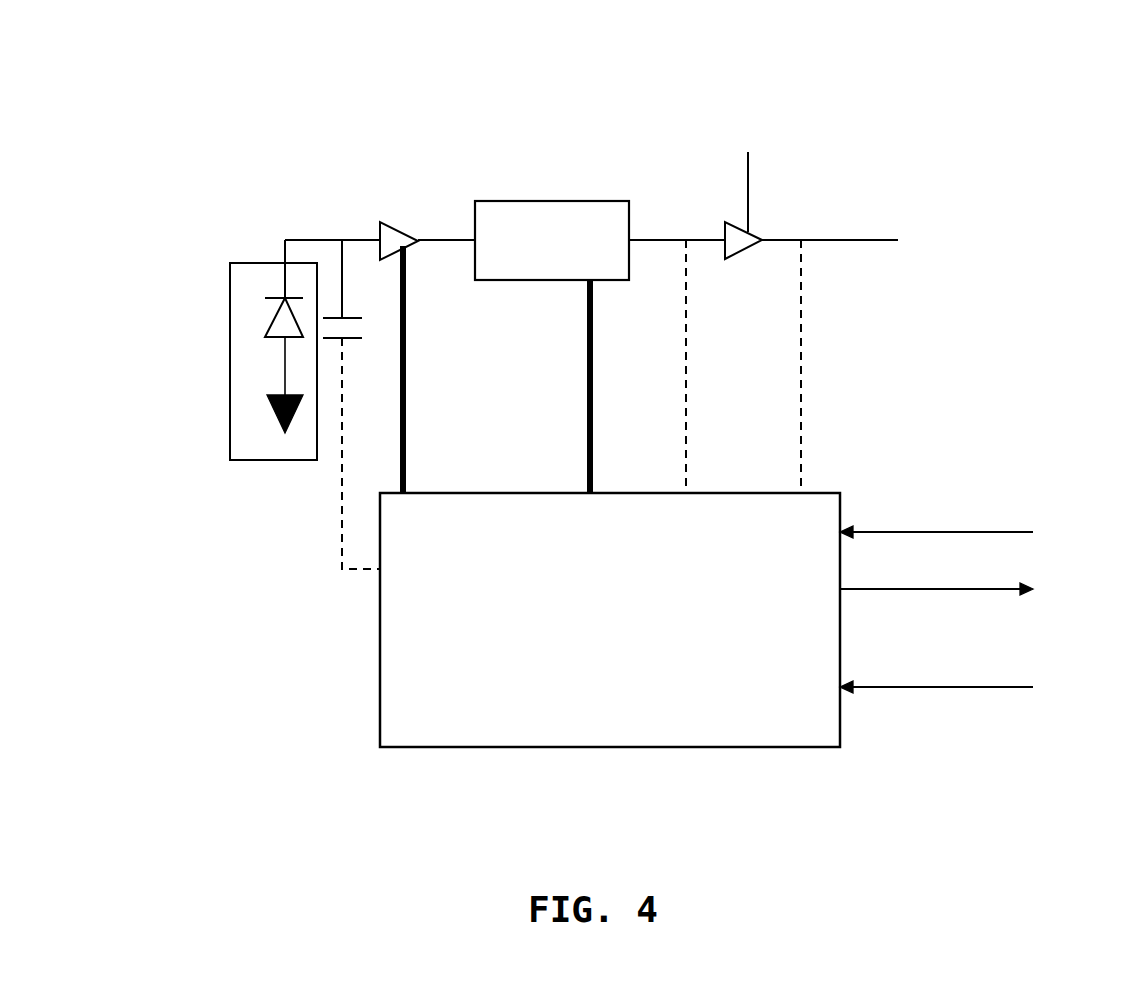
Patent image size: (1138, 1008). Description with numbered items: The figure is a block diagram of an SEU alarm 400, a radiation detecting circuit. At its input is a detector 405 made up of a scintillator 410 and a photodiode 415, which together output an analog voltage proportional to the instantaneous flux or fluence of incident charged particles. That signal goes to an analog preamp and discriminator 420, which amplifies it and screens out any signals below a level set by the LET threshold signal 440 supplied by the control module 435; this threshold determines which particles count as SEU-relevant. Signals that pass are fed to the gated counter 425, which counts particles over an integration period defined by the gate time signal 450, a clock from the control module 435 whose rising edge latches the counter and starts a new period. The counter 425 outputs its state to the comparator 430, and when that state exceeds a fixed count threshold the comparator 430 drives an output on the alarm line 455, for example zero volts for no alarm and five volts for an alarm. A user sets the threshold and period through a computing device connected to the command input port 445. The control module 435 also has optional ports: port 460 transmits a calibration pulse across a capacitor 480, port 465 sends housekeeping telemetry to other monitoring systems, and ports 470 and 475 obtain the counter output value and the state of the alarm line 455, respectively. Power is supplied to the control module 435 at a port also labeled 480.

The SEU alarm 400 is at (556, 38).
The detector 405 is at (273, 260).
The scintillator 410 is at (278, 417).
The photodiode 415 is at (272, 328).
The analog preamp and discriminator 420 is at (382, 220).
The gated counter 425 is at (554, 200).
The comparator 430 is at (726, 224).
The control module 435 is at (378, 703).
The LET threshold signal 440 is at (407, 460).
The command input port 445 is at (1010, 527).
The gate time signal 450 is at (595, 462).
The alarm line 455 is at (857, 241).
The port 460 is at (338, 503).
The port 465 is at (898, 590).
The port 470 is at (685, 460).
The port 475 is at (813, 417).
The capacitor 480 is at (900, 702).